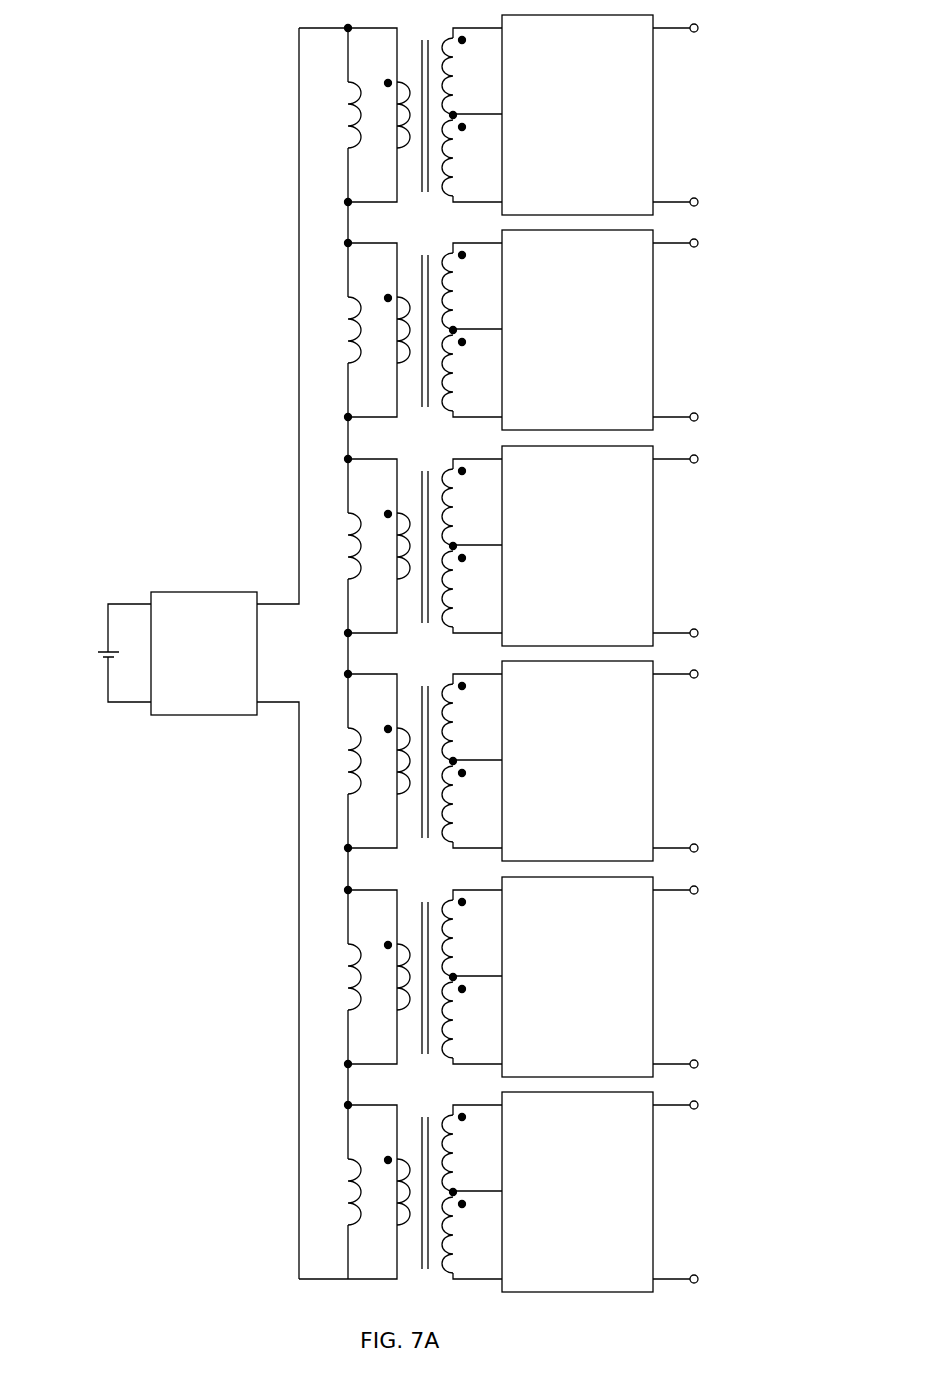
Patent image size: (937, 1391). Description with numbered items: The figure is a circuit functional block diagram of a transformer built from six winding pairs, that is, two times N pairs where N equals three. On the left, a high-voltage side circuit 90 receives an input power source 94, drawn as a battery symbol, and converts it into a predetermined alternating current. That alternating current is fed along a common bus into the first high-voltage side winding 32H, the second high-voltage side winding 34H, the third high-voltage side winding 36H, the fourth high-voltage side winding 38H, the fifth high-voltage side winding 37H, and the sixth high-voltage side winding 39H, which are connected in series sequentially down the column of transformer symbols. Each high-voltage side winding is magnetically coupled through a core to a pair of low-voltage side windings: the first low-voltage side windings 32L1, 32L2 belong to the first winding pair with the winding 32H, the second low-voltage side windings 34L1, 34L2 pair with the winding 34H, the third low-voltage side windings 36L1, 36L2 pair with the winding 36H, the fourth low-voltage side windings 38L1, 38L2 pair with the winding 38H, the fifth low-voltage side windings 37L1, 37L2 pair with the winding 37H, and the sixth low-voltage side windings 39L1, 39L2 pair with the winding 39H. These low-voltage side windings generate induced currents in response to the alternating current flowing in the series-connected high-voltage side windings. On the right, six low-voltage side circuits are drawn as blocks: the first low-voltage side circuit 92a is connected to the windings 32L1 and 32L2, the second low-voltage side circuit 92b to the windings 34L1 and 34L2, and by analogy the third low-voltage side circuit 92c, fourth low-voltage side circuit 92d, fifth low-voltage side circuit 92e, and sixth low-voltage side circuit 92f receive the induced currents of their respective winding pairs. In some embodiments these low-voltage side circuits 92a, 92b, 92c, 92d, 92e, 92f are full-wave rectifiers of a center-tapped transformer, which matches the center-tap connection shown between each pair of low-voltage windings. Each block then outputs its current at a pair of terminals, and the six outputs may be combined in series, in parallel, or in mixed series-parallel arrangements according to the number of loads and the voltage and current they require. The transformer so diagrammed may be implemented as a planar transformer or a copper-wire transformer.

The high-voltage side circuit 90 is at (190, 664).
The input power source 94 is at (98, 650).
The first low-voltage side circuit 92a is at (555, 124).
The second low-voltage side circuit 92b is at (555, 339).
The third low-voltage side circuit 92c is at (555, 555).
The fourth low-voltage side circuit 92d is at (555, 770).
The fifth low-voltage side circuit 92e is at (555, 986).
The sixth low-voltage side circuit 92f is at (555, 1201).
The first high-voltage side winding 32H is at (405, 110).
The first low-voltage side winding 32L1 is at (443, 60).
The first low-voltage side winding 32L2 is at (443, 180).
The second high-voltage side winding 34H is at (405, 325).
The second low-voltage side winding 34L1 is at (443, 275).
The second low-voltage side winding 34L2 is at (443, 395).
The third high-voltage side winding 36H is at (405, 541).
The third low-voltage side winding 36L1 is at (443, 491).
The third low-voltage side winding 36L2 is at (443, 583).
The fourth high-voltage side winding 38H is at (405, 770).
The fourth low-voltage side winding 38L1 is at (443, 722).
The fourth low-voltage side winding 38L2 is at (443, 827).
The fifth high-voltage side winding 37H is at (405, 972).
The fifth low-voltage side winding 37L1 is at (443, 922).
The fifth low-voltage side winding 37L2 is at (443, 1042).
The sixth high-voltage side winding 39H is at (405, 1187).
The sixth low-voltage side winding 39L1 is at (443, 1137).
The sixth low-voltage side winding 39L2 is at (443, 1257).